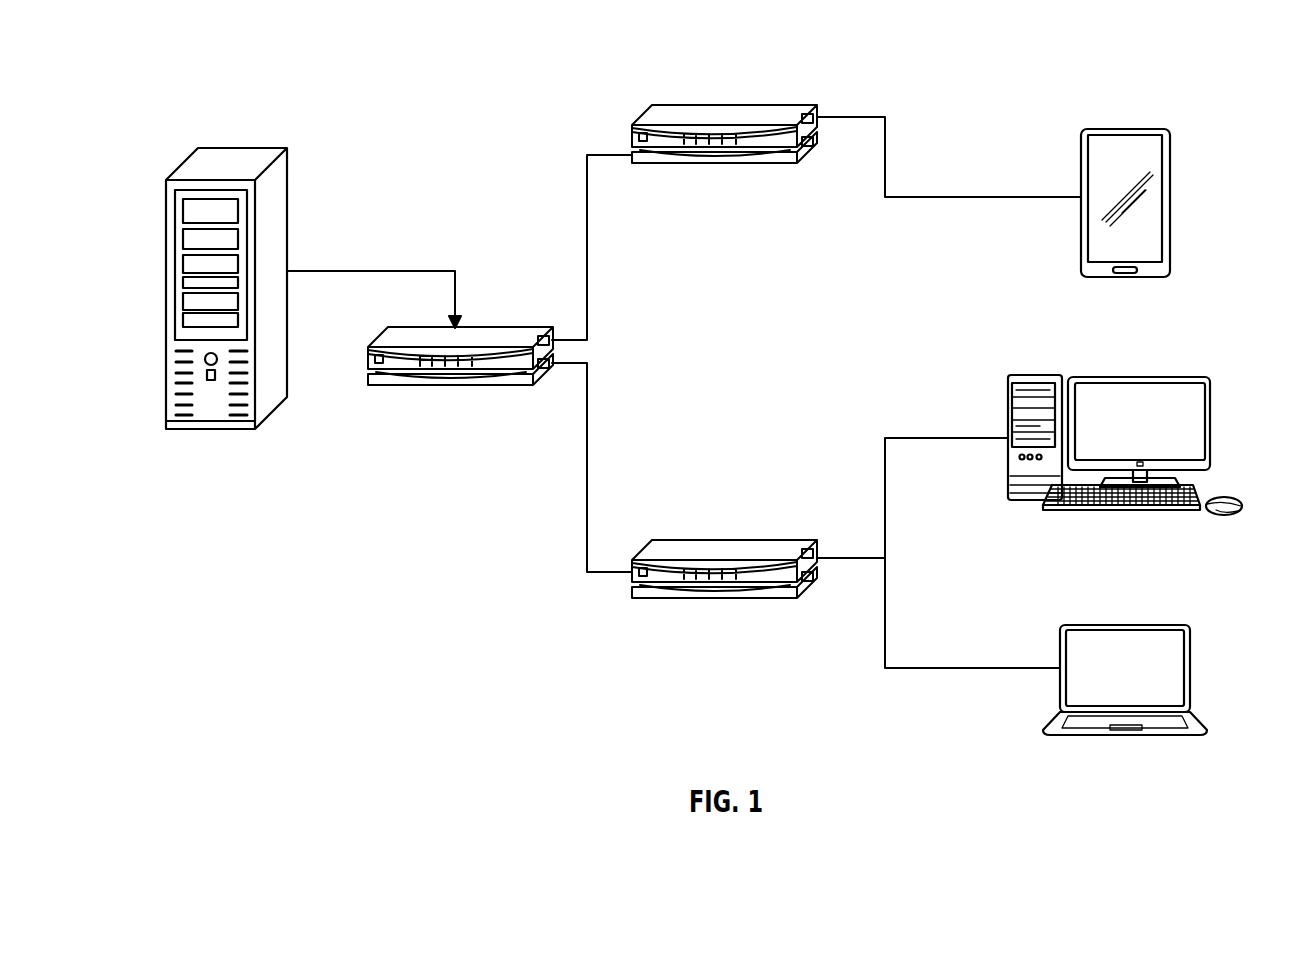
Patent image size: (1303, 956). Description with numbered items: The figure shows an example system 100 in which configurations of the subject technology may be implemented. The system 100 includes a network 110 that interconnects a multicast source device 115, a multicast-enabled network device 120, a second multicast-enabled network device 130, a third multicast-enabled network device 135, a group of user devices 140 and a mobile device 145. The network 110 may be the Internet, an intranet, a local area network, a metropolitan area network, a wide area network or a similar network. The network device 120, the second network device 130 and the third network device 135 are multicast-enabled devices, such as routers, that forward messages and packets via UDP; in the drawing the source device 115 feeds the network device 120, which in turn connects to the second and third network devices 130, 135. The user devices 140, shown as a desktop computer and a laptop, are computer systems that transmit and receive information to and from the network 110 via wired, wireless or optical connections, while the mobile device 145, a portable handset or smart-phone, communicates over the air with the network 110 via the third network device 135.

The system 100 is at (244, 96).
The network 110 is at (576, 220).
The multicast source device 115 is at (288, 198).
The multicast-enabled network device 120 is at (497, 324).
The second multicast-enabled network device 130 is at (695, 538).
The third multicast-enabled network device 135 is at (697, 103).
The user devices 140 is at (1210, 423).
The mobile device 145 is at (1170, 203).